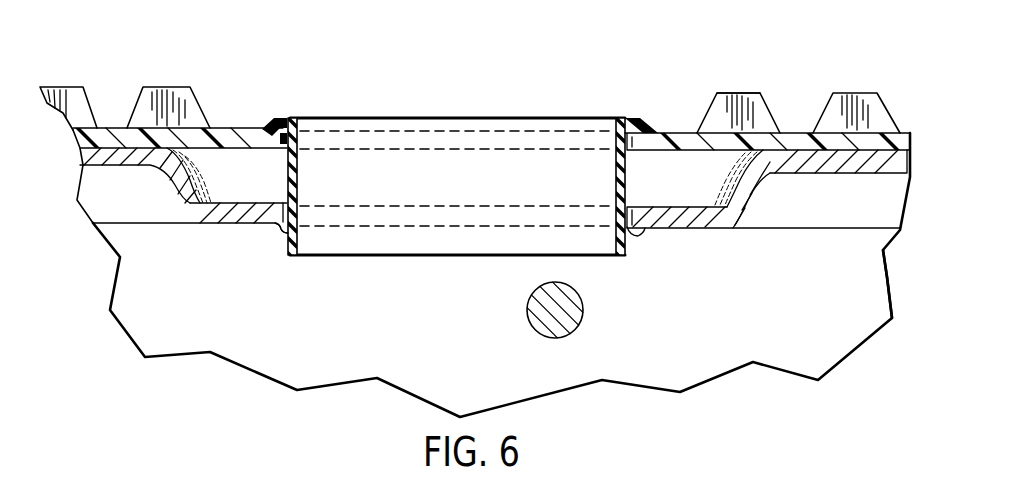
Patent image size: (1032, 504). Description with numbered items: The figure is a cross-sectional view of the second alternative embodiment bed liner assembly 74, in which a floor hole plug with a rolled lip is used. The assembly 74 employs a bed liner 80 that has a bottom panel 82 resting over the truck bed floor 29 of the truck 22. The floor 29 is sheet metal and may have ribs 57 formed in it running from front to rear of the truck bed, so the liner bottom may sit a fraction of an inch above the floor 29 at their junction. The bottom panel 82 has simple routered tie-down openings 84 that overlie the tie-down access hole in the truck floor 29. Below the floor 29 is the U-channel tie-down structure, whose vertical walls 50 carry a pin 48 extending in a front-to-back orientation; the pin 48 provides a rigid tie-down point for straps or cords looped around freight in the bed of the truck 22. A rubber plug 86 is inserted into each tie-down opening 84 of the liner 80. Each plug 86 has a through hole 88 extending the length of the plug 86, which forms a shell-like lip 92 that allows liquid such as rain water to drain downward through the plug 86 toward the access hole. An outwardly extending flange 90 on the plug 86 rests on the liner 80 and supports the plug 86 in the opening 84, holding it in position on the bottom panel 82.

The truck 22 is at (862, 285).
The truck bed floor 29 is at (133, 223).
The pin 48 is at (584, 308).
The vertical walls 50 is at (783, 308).
The ribs 57 is at (96, 150).
The bed liner assembly 74 is at (742, 60).
The bed liner 80 is at (217, 128).
The bottom panel 82 is at (790, 133).
The tie-down openings 84 is at (640, 150).
The rubber plug 86 is at (598, 110).
The through hole 88 is at (297, 175).
The outwardly extending flange 90 is at (285, 118).
The shell-like lip 92 is at (288, 246).